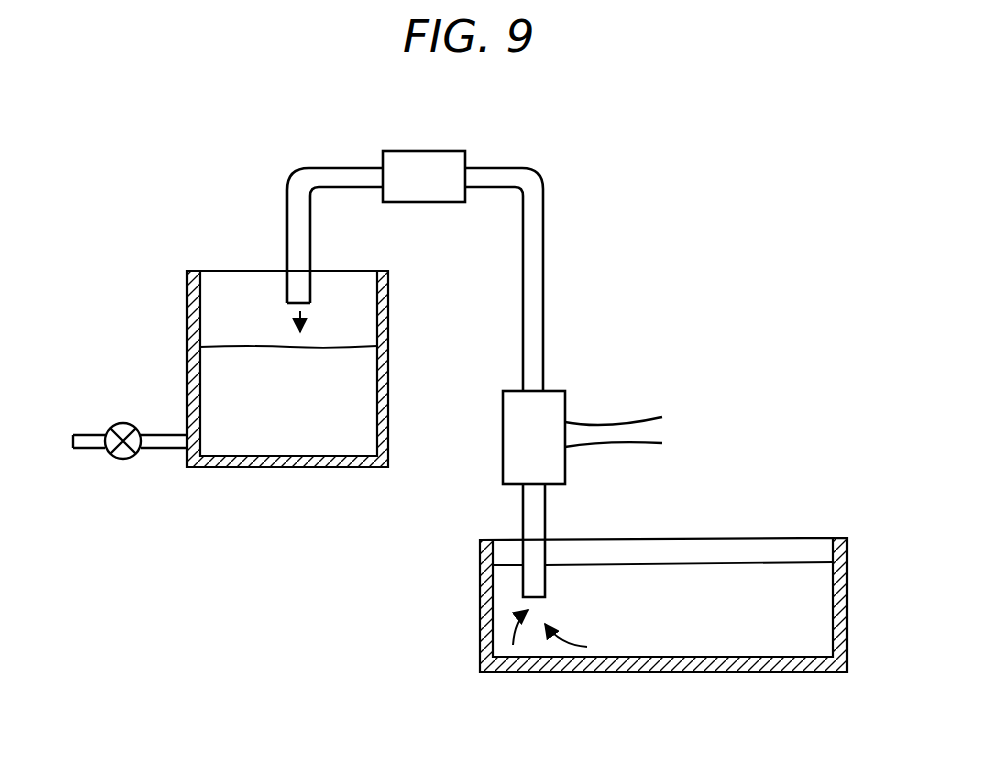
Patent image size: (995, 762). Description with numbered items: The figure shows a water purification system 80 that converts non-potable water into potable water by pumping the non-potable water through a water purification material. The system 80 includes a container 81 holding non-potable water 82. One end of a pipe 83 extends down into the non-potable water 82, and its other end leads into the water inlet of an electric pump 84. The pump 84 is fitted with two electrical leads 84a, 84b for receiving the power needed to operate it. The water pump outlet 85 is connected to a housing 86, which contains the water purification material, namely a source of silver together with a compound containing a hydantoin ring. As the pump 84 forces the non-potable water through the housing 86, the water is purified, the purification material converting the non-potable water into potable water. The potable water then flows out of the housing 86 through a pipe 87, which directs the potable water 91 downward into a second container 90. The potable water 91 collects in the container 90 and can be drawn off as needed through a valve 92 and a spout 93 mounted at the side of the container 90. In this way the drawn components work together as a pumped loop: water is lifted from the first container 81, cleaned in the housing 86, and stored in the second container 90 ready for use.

The water purification system 80 is at (556, 169).
The container 81 is at (487, 620).
The non-potable water 82 is at (638, 620).
The pipe 83 is at (528, 510).
The electric pump 84 is at (547, 402).
The electrical lead 84a is at (628, 417).
The electrical lead 84b is at (610, 447).
The water pump outlet 85 is at (540, 280).
The housing 86 is at (430, 158).
The pipe 87 is at (315, 168).
The container 90 is at (187, 297).
The potable water 91 is at (310, 409).
The valve 92 is at (127, 458).
The spout 93 is at (78, 433).